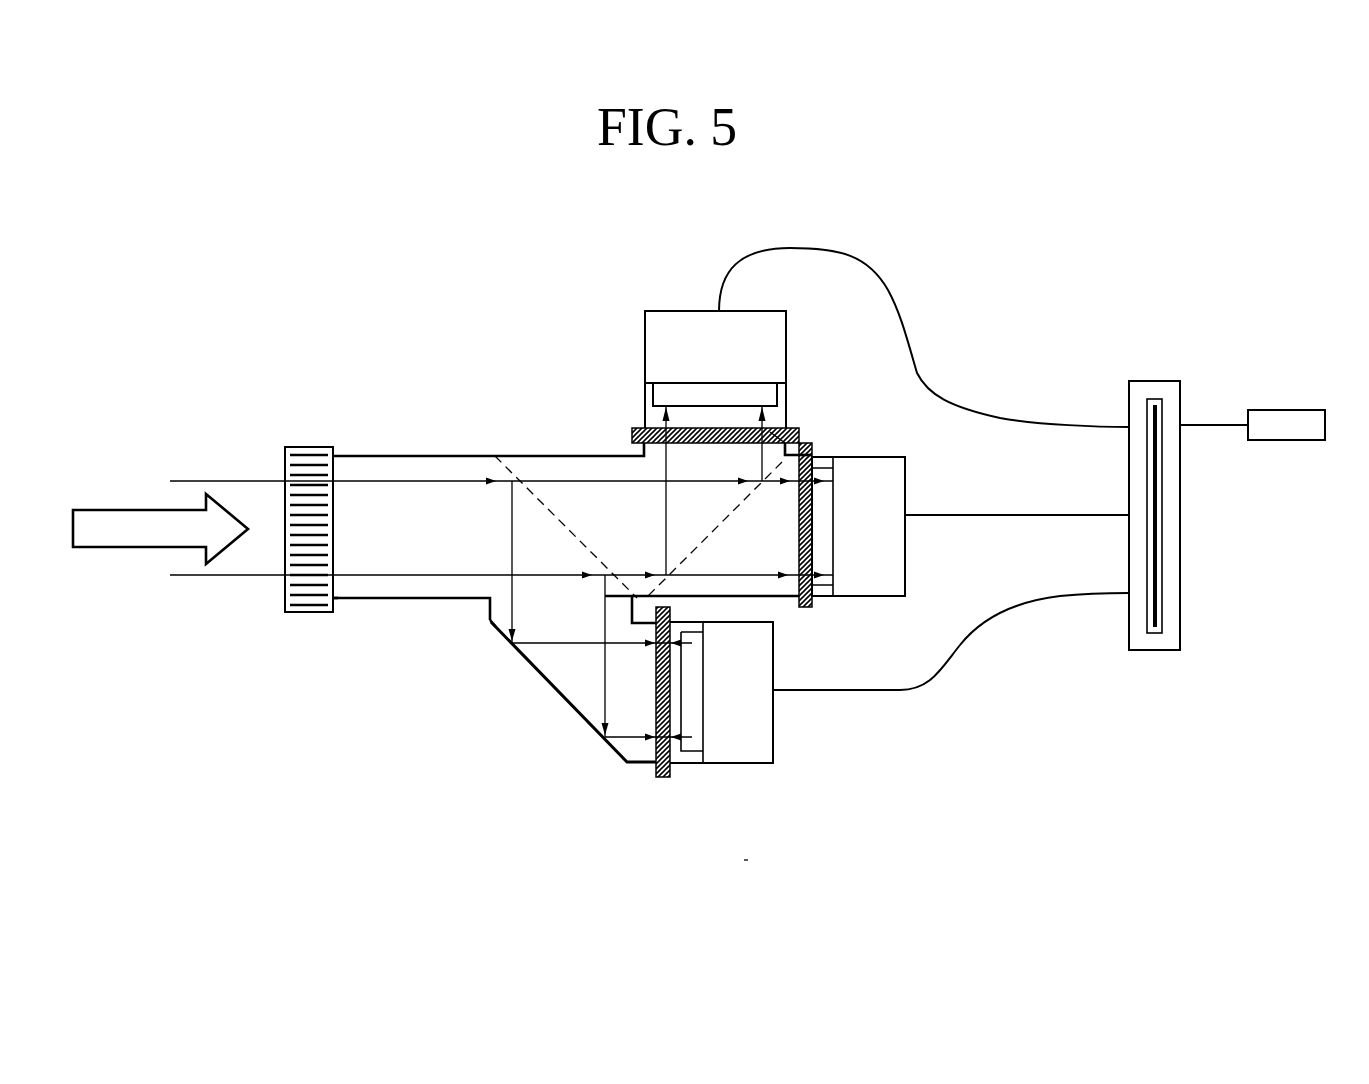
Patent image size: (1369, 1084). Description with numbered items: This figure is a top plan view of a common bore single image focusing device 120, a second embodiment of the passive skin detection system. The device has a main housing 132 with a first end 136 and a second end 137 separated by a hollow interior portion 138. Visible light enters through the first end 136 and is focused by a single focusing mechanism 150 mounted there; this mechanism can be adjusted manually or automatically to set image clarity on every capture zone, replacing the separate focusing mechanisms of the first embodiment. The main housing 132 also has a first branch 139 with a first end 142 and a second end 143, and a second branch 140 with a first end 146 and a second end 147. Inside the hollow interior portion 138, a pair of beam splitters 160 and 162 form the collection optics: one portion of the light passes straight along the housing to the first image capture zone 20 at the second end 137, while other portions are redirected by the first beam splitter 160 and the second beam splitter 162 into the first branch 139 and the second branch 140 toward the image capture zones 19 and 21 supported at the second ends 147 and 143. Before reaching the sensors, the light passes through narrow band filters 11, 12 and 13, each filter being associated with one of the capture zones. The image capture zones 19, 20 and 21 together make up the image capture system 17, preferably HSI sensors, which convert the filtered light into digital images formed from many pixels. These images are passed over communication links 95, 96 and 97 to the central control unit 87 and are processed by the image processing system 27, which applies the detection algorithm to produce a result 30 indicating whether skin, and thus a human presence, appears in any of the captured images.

The common bore single image focusing device 120 is at (323, 334).
The main housing 132 is at (358, 448).
The focusing mechanism 150 is at (297, 465).
The first end 136 is at (338, 600).
The hollow interior portion 138 is at (415, 548).
The first end 142 is at (497, 630).
The first branch 139 is at (518, 664).
The first beam splitter 160 is at (535, 497).
The second beam splitter 162 is at (738, 507).
The narrow band filter 11 is at (680, 445).
The image capture zone 19 is at (674, 327).
The second end 147 is at (645, 388).
The second branch 140 is at (640, 423).
The first end 146 is at (772, 438).
The second end 137 is at (818, 455).
The narrow band filter 12 is at (799, 533).
The first image capture zone 20 is at (905, 558).
The narrow band filter 13 is at (656, 692).
The image capture zone 21 is at (757, 740).
The second end 143 is at (683, 765).
The image capture system 17 is at (747, 866).
The communication link 95 is at (882, 253).
The communication link 96 is at (988, 515).
The communication link 97 is at (997, 616).
The central control unit 87 is at (1156, 388).
The image processing system 27 is at (1162, 580).
The result 30 is at (1290, 410).